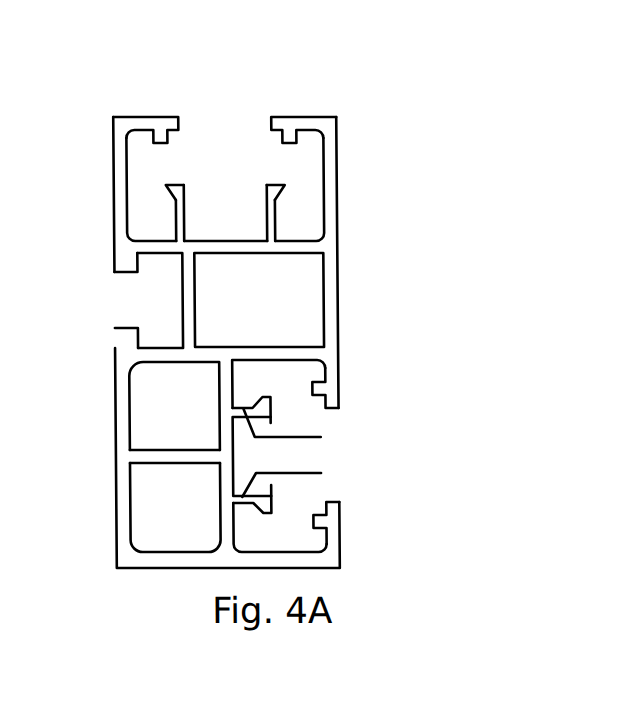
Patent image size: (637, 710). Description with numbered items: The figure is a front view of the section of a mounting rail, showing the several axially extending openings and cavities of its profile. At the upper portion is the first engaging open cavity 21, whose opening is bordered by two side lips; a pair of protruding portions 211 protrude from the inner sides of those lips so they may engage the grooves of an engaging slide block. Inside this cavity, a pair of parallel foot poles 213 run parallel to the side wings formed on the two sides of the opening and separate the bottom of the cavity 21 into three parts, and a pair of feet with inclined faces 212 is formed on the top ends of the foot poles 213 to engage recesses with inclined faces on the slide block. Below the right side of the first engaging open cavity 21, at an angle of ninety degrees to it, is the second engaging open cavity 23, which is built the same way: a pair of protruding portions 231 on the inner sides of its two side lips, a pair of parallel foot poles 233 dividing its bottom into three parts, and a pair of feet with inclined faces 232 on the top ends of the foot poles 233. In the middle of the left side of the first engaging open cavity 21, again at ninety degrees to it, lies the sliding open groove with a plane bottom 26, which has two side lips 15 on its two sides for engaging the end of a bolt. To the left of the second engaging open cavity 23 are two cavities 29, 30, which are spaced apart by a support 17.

The first engaging open cavity 21 is at (214, 182).
The protruding portions 211 is at (158, 138).
The feet with inclined faces 212 is at (166, 184).
The foot poles 213 is at (183, 224).
The side lips 15 is at (128, 262).
The sliding open groove with a plane bottom 26 is at (162, 298).
The cavity 29 is at (157, 407).
The support 17 is at (158, 458).
The cavity 30 is at (158, 505).
The second engaging open cavity 23 is at (310, 459).
The protruding portions 231 is at (317, 388).
The feet with inclined faces 232 is at (270, 423).
The foot poles 233 is at (320, 437).